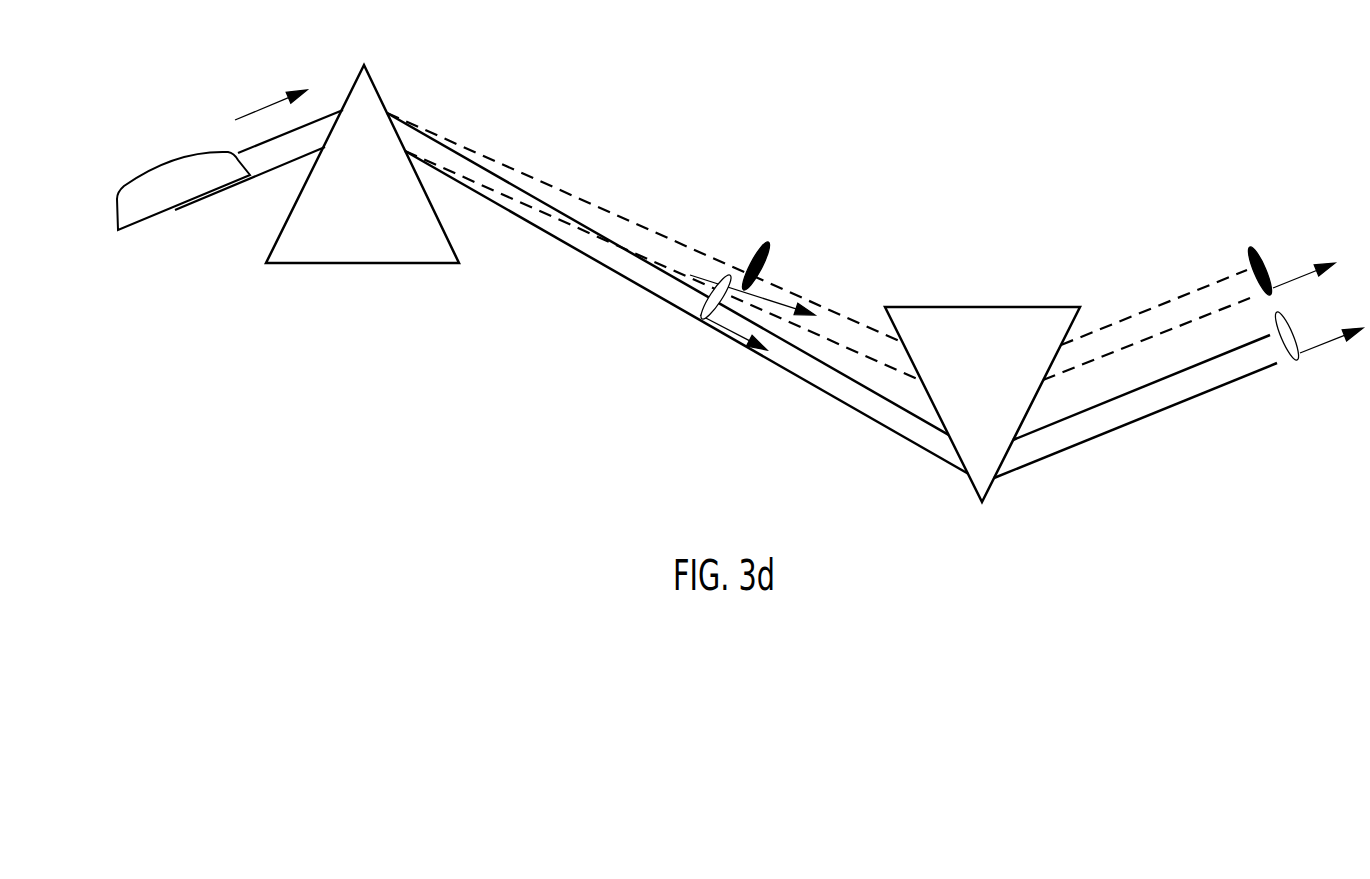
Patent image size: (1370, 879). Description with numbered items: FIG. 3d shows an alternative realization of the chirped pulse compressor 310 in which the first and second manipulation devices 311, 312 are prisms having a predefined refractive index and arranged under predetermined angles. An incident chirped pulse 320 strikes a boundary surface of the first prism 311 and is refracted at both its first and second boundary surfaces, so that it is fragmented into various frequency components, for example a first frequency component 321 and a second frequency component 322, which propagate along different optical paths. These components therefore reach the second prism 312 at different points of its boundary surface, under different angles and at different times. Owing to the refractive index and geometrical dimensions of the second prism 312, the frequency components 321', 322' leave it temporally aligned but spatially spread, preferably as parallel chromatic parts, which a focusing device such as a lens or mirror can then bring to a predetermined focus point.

The optical arrangement 310 is at (953, 118).
The first manipulation device 311 is at (363, 266).
The second manipulation device 312 is at (1010, 307).
The incident chirped pulse 320 is at (165, 212).
The first frequency component 321 is at (654, 247).
The second frequency component 322 is at (677, 293).
The first frequency component after the second prism 321' is at (1189, 290).
The second frequency component after the second prism 322' is at (1178, 394).